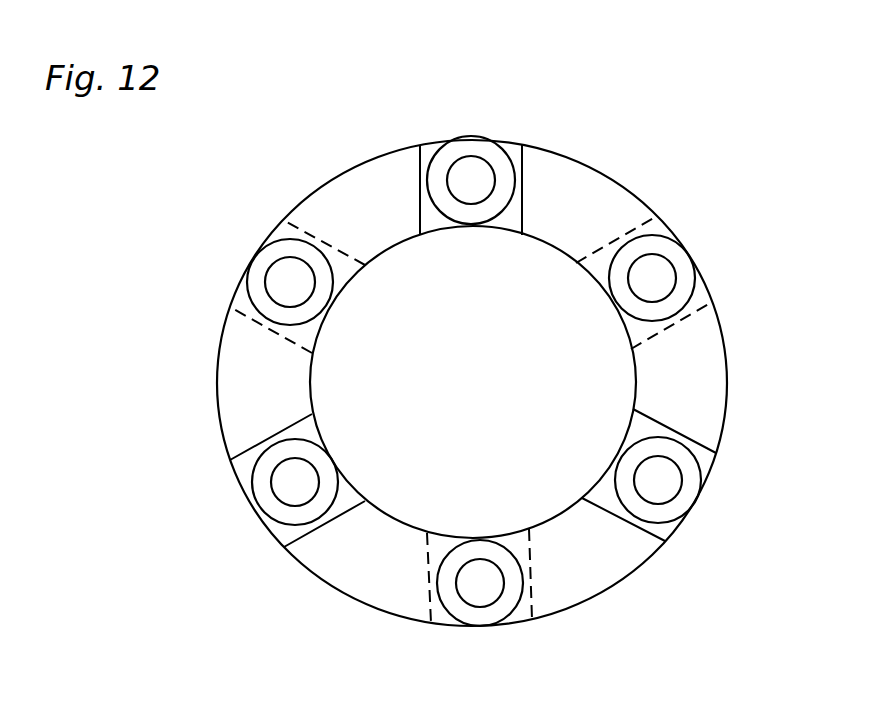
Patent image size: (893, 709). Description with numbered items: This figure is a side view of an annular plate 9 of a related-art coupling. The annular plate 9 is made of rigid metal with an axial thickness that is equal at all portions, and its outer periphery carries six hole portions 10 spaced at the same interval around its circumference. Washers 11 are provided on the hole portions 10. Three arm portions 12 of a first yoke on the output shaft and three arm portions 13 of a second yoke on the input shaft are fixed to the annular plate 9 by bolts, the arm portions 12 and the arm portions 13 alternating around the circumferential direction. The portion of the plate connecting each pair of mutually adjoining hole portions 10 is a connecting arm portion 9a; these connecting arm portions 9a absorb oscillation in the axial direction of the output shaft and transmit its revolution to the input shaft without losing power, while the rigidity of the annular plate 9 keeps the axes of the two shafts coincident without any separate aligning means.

The annular plate 9 is at (652, 196).
The connecting arm portion 9a is at (407, 150).
The hole portion 10 is at (476, 157).
The washer 11 is at (498, 160).
The arm portion of first yoke 12 is at (508, 224).
The arm portion of second yoke 13 is at (277, 232).